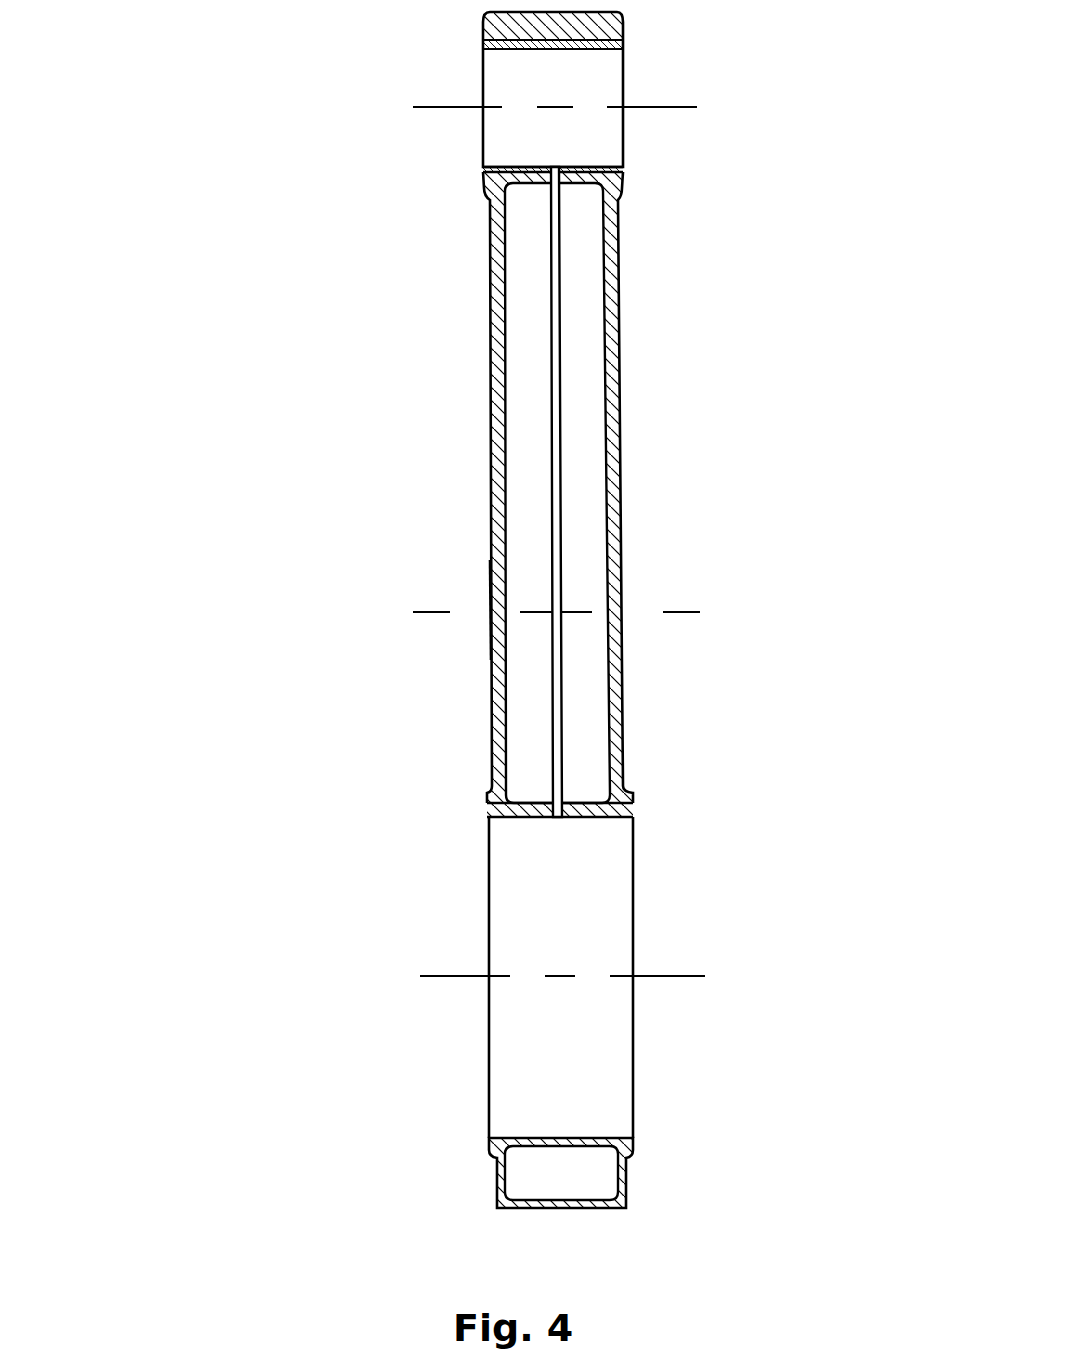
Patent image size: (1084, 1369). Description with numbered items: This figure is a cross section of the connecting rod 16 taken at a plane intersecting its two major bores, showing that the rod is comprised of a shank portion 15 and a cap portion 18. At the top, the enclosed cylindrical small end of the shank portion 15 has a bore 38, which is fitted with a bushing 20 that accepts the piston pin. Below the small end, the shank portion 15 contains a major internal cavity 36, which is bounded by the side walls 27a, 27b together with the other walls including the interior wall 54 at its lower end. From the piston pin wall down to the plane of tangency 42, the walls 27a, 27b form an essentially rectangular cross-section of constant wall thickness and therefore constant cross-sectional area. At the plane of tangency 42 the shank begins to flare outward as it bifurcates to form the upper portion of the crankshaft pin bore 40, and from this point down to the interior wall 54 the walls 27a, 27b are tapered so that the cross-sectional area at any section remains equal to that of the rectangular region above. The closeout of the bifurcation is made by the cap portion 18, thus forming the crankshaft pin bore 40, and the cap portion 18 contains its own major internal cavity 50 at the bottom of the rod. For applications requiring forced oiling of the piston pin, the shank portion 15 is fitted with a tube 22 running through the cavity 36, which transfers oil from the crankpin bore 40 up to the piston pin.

The bore 38 is at (482, 108).
The bushing 20 is at (604, 165).
The tube 22 is at (555, 277).
The wall 27a is at (495, 397).
The wall 27b is at (612, 370).
The plane of tangency 42 is at (485, 612).
The major internal cavity 36 is at (527, 730).
The wall 54 is at (578, 806).
The crankshaft pin bore 40 is at (488, 977).
The major internal cavity 50 is at (530, 1170).
The shank portion 15 is at (855, 525).
The connecting rod 16 is at (178, 591).
The cap portion 18 is at (860, 1062).